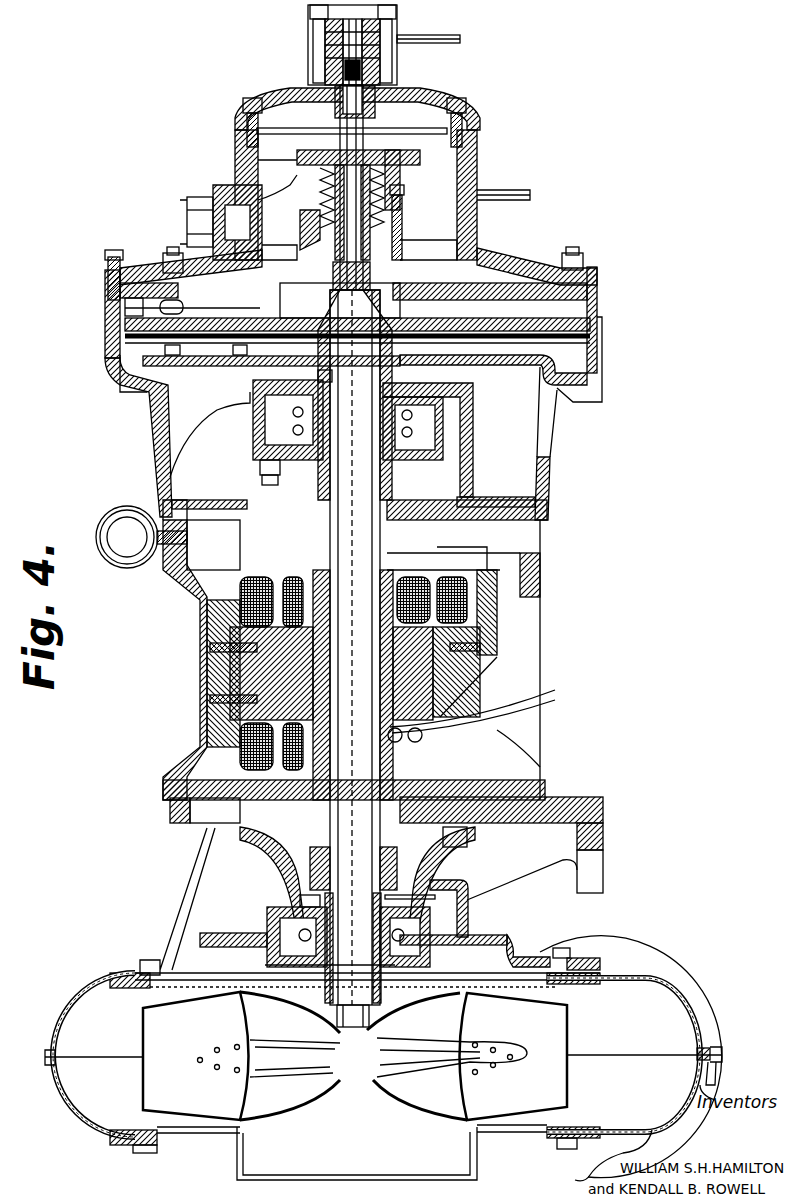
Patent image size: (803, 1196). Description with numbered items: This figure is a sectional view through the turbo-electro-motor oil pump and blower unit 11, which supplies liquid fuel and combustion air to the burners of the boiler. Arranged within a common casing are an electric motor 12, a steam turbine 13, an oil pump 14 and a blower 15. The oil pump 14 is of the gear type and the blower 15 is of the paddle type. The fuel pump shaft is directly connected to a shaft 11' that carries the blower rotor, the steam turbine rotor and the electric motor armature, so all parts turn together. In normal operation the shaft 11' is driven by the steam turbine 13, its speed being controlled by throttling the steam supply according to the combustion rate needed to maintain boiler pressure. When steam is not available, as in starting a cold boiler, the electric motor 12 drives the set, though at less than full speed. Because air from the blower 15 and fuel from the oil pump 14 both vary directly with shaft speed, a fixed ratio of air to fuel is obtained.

The turbo-electro-motor oil pump and blower unit 11 is at (349, 737).
The shaft 11' is at (335, 556).
The electric motor 12 is at (240, 718).
The steam turbine 13 is at (120, 312).
The oil pump 14 is at (310, 62).
The blower 15 is at (183, 1100).